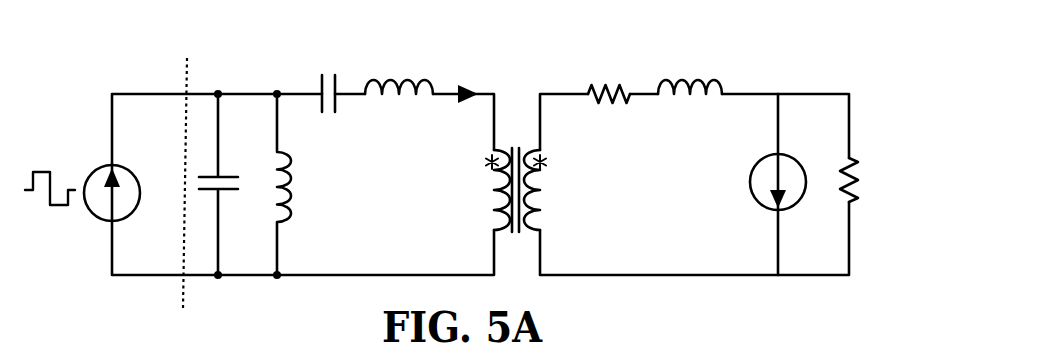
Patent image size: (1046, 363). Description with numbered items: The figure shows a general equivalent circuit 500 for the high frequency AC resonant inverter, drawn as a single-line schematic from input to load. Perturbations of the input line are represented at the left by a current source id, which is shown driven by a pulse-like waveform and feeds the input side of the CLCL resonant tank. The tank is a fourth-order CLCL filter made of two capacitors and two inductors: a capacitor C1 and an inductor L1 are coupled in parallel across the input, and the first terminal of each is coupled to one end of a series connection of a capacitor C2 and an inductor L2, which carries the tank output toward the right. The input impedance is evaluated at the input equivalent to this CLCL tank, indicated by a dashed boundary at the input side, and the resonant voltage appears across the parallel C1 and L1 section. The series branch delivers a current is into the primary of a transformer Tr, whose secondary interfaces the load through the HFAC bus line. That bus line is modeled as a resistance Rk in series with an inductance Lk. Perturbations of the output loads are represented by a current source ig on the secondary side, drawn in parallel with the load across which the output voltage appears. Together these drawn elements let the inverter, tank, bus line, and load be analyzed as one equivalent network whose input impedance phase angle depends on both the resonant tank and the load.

The general equivalent circuit 500 is at (117, 52).
The current source id is at (111, 183).
The capacitor C1 is at (211, 184).
The inductor L1 is at (303, 184).
The capacitor C2 is at (335, 115).
The inductor L2 is at (399, 110).
The transformer primary current is is at (468, 116).
The transformer Tr is at (517, 214).
The resistance Rk is at (609, 114).
The inductance Lk is at (690, 109).
The current source ig is at (763, 182).